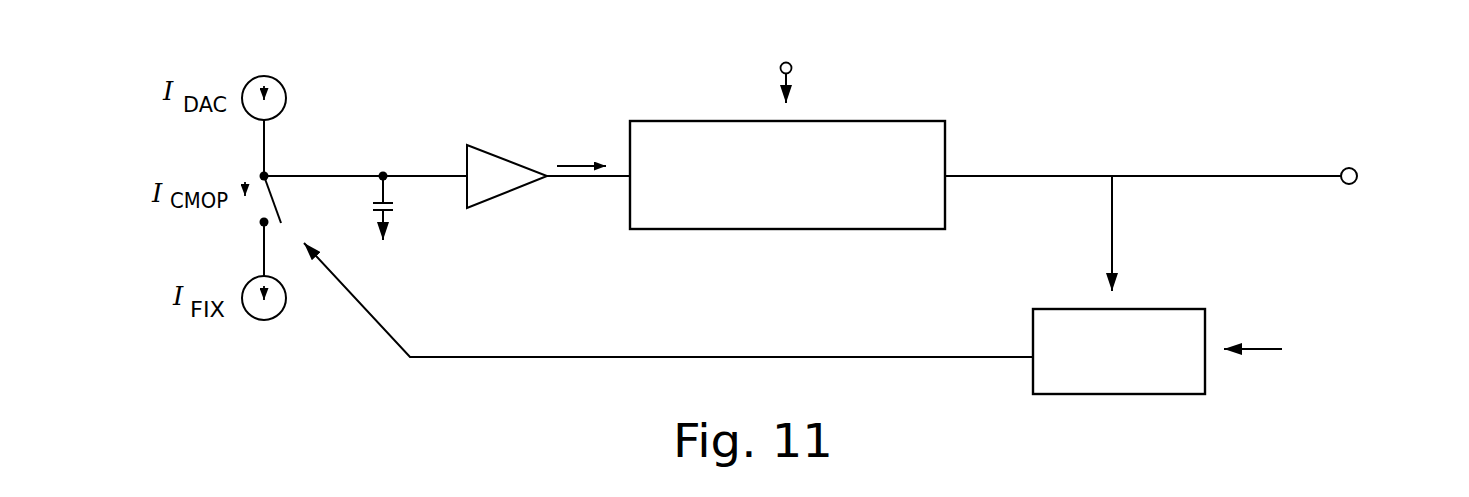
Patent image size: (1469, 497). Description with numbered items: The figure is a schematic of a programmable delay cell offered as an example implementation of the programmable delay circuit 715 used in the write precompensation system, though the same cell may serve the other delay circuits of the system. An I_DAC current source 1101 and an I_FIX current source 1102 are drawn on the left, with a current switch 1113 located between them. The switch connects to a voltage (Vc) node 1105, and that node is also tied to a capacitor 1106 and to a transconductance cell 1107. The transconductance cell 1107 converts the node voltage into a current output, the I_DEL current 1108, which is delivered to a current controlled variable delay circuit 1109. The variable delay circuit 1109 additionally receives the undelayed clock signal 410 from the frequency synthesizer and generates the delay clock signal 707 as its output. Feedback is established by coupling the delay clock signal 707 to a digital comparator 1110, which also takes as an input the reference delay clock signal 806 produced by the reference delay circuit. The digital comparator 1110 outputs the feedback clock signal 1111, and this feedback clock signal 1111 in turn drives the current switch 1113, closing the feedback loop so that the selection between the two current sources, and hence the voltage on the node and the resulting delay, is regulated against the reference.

The I_DAC current source 1101 is at (292, 82).
The I_FIX current source 1102 is at (291, 316).
The voltage (Vc) node 1105 is at (343, 131).
The capacitor 1106 is at (408, 224).
The transconductance cell 1107 is at (479, 158).
The delay control current I_DEL 1108 is at (555, 121).
The current controlled variable delay circuit 1109 is at (787, 198).
The digital comparator 1110 is at (1119, 373).
The feedback clock signal 1111 is at (668, 324).
The current switch 1113 is at (309, 199).
The undelayed clock signal 410 is at (811, 70).
The delay clock signal 707 is at (1143, 188).
The programmable delay circuit 715 is at (1283, 126).
The reference delay clock signal 806 is at (1330, 338).